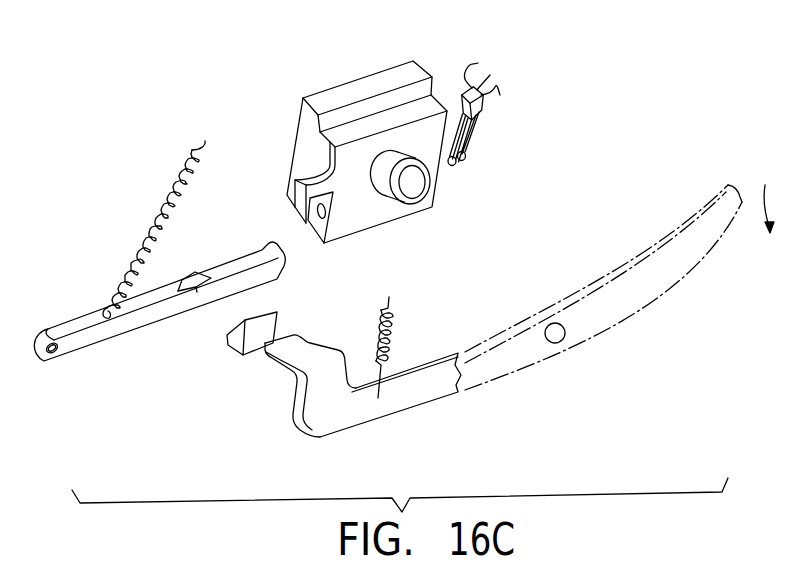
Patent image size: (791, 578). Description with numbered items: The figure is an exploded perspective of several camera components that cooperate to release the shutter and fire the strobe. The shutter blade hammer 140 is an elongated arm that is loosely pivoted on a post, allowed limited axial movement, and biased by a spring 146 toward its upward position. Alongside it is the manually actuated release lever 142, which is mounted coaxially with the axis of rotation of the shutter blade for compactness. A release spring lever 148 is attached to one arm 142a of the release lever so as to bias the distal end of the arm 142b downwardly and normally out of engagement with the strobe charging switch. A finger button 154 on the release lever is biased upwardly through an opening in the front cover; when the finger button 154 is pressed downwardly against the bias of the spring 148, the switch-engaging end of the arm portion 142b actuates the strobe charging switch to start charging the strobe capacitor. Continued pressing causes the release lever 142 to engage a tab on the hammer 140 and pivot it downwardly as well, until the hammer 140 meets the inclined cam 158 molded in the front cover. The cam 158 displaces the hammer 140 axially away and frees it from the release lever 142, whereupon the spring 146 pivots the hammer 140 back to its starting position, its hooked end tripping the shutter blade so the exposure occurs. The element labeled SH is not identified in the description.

The sensor housing SH is at (413, 60).
The shutter blade hammer 140 is at (84, 324).
The release lever 142 is at (321, 445).
The arm of the release lever 142a is at (432, 389).
The arm portion of the release lever 142b is at (663, 273).
The spring 146 is at (175, 188).
The release spring lever 148 is at (392, 316).
The finger button 154 is at (305, 352).
The inclined cam 158 is at (230, 342).